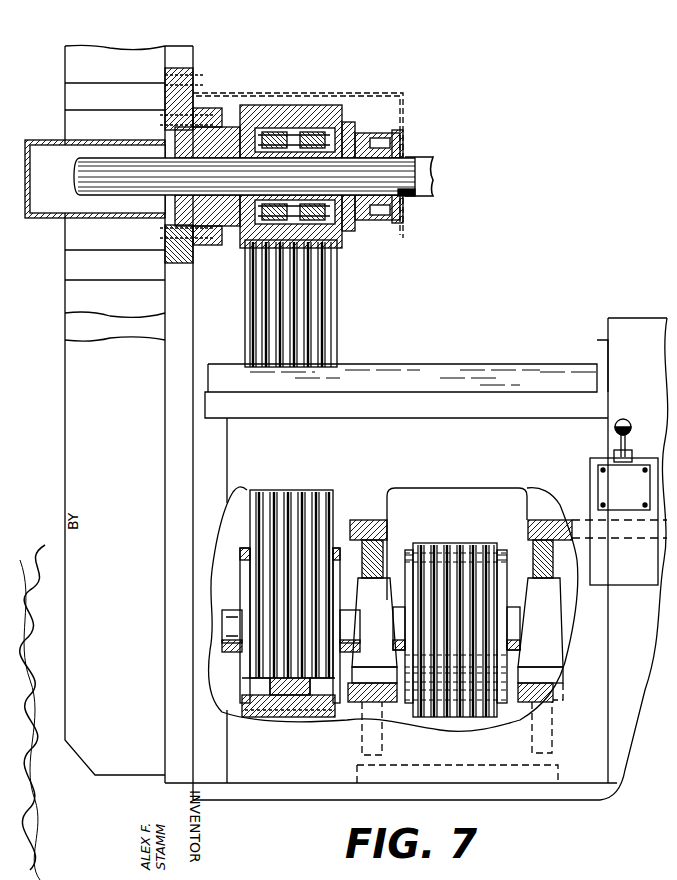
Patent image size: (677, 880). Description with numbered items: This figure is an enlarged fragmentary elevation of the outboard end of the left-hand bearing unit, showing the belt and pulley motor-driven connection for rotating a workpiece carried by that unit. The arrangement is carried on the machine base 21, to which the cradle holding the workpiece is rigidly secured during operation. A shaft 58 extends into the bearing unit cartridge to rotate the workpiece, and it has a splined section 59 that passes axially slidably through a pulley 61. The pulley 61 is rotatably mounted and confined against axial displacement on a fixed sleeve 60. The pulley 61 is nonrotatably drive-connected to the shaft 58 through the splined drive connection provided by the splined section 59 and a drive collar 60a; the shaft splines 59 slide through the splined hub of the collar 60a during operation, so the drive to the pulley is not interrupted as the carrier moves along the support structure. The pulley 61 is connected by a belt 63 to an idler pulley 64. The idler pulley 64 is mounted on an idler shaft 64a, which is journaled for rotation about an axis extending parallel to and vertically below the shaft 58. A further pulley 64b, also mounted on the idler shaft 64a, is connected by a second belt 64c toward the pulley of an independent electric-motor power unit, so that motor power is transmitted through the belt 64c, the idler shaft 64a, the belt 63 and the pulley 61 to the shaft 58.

The machine base 21 is at (468, 364).
The shaft 58 is at (432, 161).
The splined section 59 is at (407, 193).
The fixed sleeve 60 is at (272, 143).
The drive collar 60a is at (404, 143).
The pulley 61 is at (296, 128).
The belt 63 is at (324, 292).
The idler pulley 64 is at (280, 712).
The idler shaft 64a is at (230, 628).
The further pulley 64b is at (403, 550).
The belt 64c is at (463, 548).